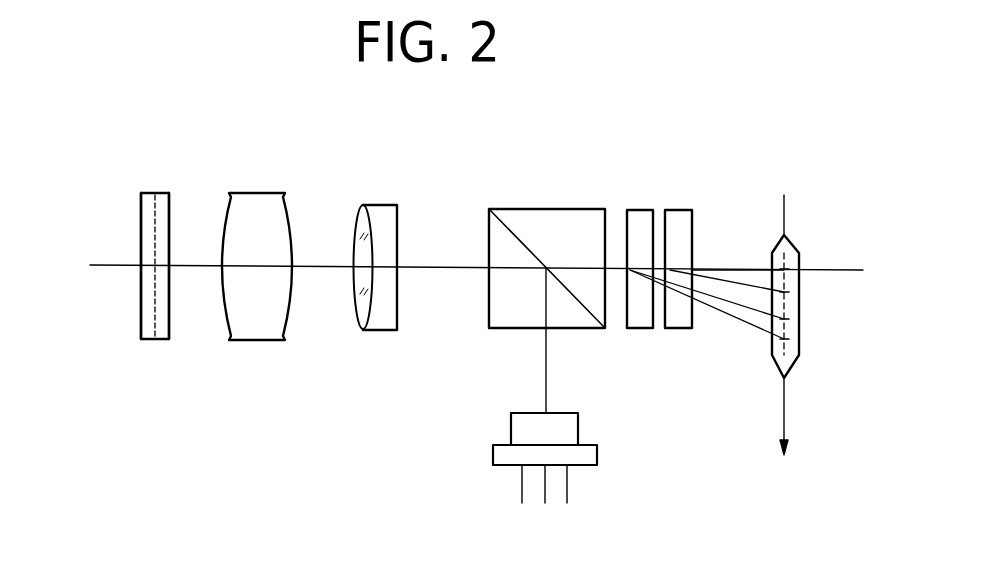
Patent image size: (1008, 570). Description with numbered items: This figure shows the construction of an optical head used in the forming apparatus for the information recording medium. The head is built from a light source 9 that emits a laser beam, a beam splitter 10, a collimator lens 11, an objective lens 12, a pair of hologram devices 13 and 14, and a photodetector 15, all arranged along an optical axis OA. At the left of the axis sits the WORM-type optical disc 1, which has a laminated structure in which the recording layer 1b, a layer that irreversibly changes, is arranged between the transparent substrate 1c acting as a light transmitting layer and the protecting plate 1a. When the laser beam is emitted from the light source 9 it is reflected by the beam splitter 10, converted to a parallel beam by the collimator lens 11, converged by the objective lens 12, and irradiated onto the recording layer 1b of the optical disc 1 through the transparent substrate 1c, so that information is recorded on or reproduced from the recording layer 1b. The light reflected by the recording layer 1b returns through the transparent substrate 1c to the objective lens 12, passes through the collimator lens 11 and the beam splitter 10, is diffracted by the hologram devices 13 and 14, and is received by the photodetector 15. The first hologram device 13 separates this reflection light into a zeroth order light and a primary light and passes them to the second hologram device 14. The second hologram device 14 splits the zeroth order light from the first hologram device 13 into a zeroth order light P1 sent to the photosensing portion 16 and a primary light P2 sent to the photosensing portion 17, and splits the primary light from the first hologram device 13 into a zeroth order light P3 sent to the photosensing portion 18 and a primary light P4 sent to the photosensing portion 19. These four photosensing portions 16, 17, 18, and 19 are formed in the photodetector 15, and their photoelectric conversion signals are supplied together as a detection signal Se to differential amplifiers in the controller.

The optical disc 1 is at (160, 192).
The protecting plate 1a is at (145, 321).
The recording layer 1b is at (153, 343).
The transparent substrate 1c is at (163, 340).
The objective lens 12 is at (262, 193).
The collimator lens 11 is at (387, 203).
The beam splitter 10 is at (550, 208).
The light source 9 is at (578, 426).
The first hologram device 13 is at (642, 209).
The second hologram device 14 is at (680, 209).
The photodetector 15 is at (790, 240).
The photosensing portion 16 is at (789, 268).
The photosensing portion 17 is at (789, 293).
The photosensing portion 18 is at (789, 320).
The photosensing portion 19 is at (797, 352).
The 0th order light P1 is at (708, 270).
The primary light P2 is at (749, 285).
The 0th order light P3 is at (717, 298).
The primary light P4 is at (743, 322).
The optical axis OA is at (318, 268).
The detection signal Se is at (783, 430).